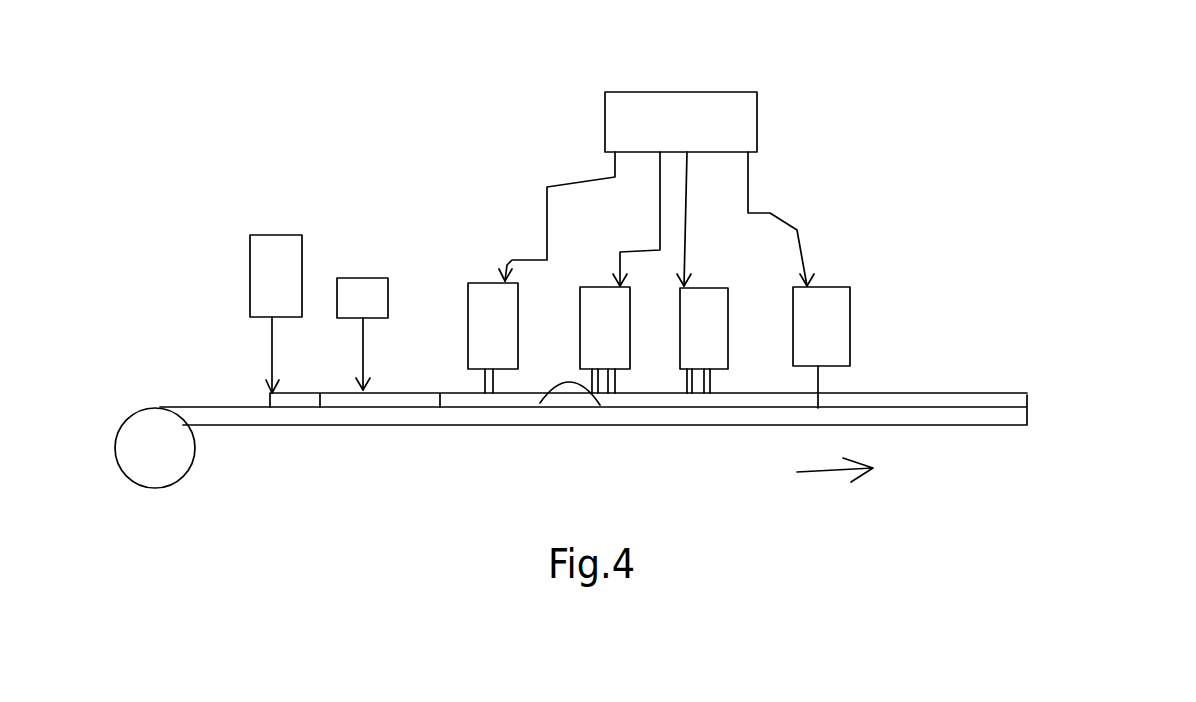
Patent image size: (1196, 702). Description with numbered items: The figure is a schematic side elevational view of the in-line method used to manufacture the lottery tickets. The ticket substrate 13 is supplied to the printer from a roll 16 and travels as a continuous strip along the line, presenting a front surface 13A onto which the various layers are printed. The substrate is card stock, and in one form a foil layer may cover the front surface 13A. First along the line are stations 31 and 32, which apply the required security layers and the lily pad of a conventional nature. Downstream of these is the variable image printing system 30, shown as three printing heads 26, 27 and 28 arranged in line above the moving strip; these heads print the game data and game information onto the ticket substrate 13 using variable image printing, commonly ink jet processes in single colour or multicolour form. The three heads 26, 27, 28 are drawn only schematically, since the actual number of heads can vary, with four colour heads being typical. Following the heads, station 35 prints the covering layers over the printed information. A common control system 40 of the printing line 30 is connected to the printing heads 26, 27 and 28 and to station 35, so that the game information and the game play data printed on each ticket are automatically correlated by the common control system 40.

The common control system 40 is at (677, 102).
The variable image printing system 30 is at (862, 257).
The station 31 is at (272, 258).
The station 32 is at (360, 295).
The printing head 26 is at (488, 293).
The printing head 27 is at (603, 297).
The printing head 28 is at (703, 300).
The station 35 is at (835, 323).
The ticket substrate 13 is at (1048, 393).
The front surface 13A is at (600, 405).
The roll 16 is at (163, 467).